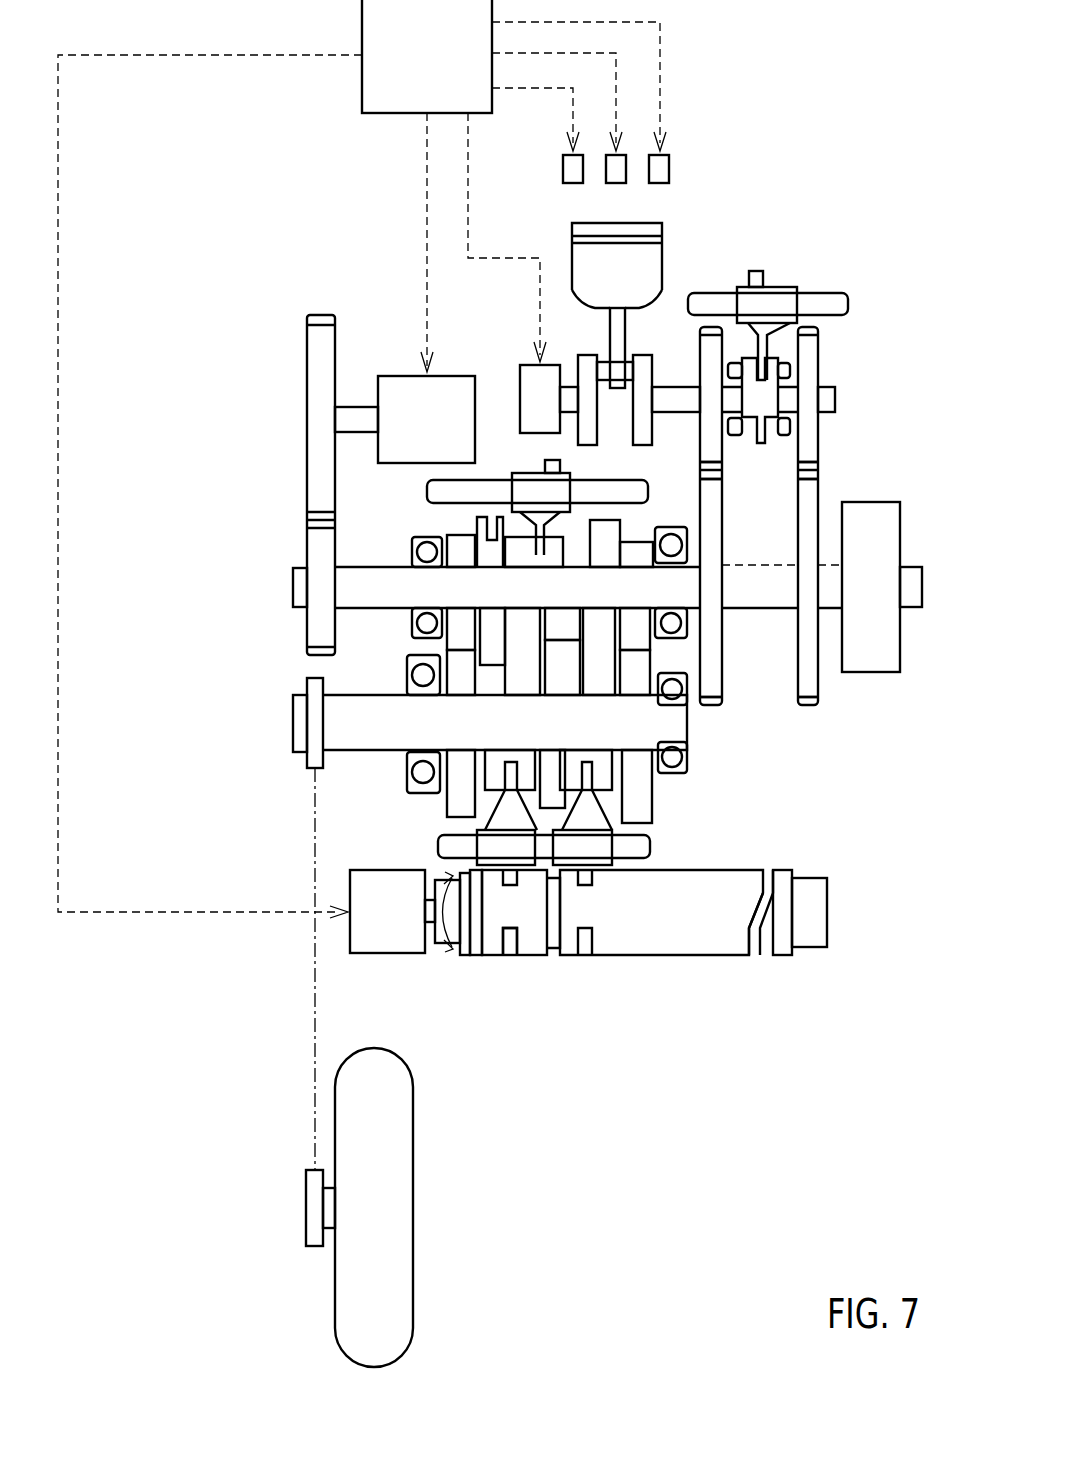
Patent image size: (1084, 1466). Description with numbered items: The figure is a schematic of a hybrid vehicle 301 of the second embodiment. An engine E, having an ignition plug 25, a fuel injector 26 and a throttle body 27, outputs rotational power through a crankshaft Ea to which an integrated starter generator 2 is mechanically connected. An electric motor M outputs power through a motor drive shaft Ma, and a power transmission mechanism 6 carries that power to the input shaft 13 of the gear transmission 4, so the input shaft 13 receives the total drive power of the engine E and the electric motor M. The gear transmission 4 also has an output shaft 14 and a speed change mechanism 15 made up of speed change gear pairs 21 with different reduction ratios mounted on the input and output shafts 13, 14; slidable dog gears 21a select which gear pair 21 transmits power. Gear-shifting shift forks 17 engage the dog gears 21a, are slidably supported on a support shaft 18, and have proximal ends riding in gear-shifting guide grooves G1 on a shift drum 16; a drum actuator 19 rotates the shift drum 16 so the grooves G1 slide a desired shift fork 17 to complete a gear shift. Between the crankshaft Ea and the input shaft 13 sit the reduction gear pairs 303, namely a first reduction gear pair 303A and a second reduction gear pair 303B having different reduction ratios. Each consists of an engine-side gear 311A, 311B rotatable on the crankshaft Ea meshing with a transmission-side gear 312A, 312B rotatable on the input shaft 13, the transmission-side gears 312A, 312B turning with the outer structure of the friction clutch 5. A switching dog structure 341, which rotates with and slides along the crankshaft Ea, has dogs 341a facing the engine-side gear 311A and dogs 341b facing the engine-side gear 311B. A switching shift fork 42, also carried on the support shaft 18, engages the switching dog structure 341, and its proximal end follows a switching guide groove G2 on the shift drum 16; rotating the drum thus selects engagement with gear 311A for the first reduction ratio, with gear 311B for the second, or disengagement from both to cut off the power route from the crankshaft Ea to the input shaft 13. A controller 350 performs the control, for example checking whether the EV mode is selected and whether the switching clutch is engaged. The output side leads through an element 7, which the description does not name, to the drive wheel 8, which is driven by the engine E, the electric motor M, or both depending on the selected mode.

The controller 350 is at (362, 20).
The hybrid vehicle 301 is at (847, 70).
The ignition plug 25 is at (563, 172).
The fuel injector 26 is at (617, 183).
The throttle body 27 is at (670, 165).
The engine E is at (728, 157).
The crankshaft Ea is at (835, 400).
The integrated starter generator 2 is at (520, 385).
The clutch 303 is at (811, 450).
The first reduction gear pair 303A is at (697, 345).
The second reduction gear pair 303B is at (823, 345).
The engine-side gear 311A is at (722, 443).
The engine-side gear 311B is at (820, 450).
The transmission-side gear 312A is at (712, 706).
The transmission-side gear 312B is at (808, 706).
The switching dog structure 341 is at (821, 325).
The dogs 341a is at (733, 362).
The dogs 341b is at (793, 425).
The switching shift fork 42 is at (780, 293).
The friction clutch 5 is at (868, 672).
The electric motor M is at (407, 372).
The motor drive shaft Ma is at (355, 405).
The power transmission mechanism 6 is at (307, 462).
The input shaft 13 is at (293, 583).
The output shaft 14 is at (293, 722).
The gear transmission 4 is at (400, 548).
The speed change mechanism 15 is at (402, 672).
The gear-shifting shift forks 17 is at (533, 483).
The support shaft 18 is at (830, 293).
The speed change gear pairs 21 is at (539, 655).
The shifting dog gears 21a is at (572, 533).
The drum actuator 19 is at (390, 955).
The shift drum 16 is at (827, 910).
The gear-shifting guide grooves G1 is at (595, 950).
The switching guide groove G2 is at (752, 955).
The chain 7 is at (315, 990).
The drive wheel 8 is at (405, 1208).